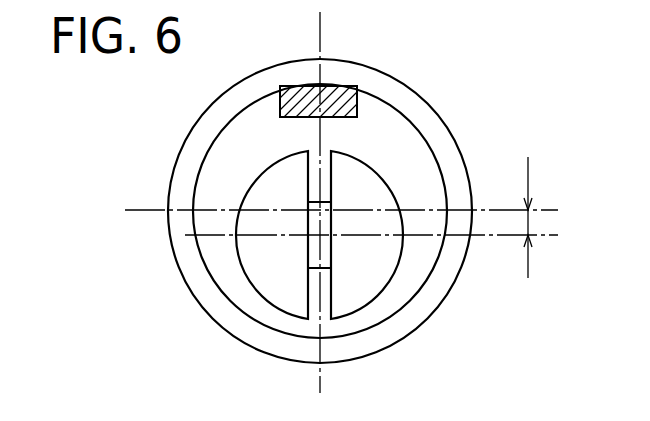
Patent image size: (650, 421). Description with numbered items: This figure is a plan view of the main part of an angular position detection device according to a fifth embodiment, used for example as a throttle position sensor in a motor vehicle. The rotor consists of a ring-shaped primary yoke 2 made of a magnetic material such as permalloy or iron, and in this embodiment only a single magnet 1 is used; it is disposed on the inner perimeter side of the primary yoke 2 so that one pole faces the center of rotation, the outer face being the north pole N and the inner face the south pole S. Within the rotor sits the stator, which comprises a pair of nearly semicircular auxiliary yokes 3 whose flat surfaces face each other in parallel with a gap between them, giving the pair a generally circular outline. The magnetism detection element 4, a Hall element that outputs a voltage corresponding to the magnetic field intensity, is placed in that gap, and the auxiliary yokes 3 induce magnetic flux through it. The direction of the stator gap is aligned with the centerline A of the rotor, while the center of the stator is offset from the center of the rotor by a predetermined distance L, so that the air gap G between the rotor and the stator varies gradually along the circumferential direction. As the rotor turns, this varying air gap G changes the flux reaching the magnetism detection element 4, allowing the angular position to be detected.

The magnet 1 is at (297, 86).
The primary yoke 2 is at (188, 264).
The auxiliary yokes 3 is at (277, 284).
The magnetism detection element 4 is at (313, 259).
The air gap G is at (397, 128).
The offset distance L is at (538, 217).
The north pole N is at (348, 74).
The south pole S is at (348, 130).
The centerline A— A is at (341, 210).